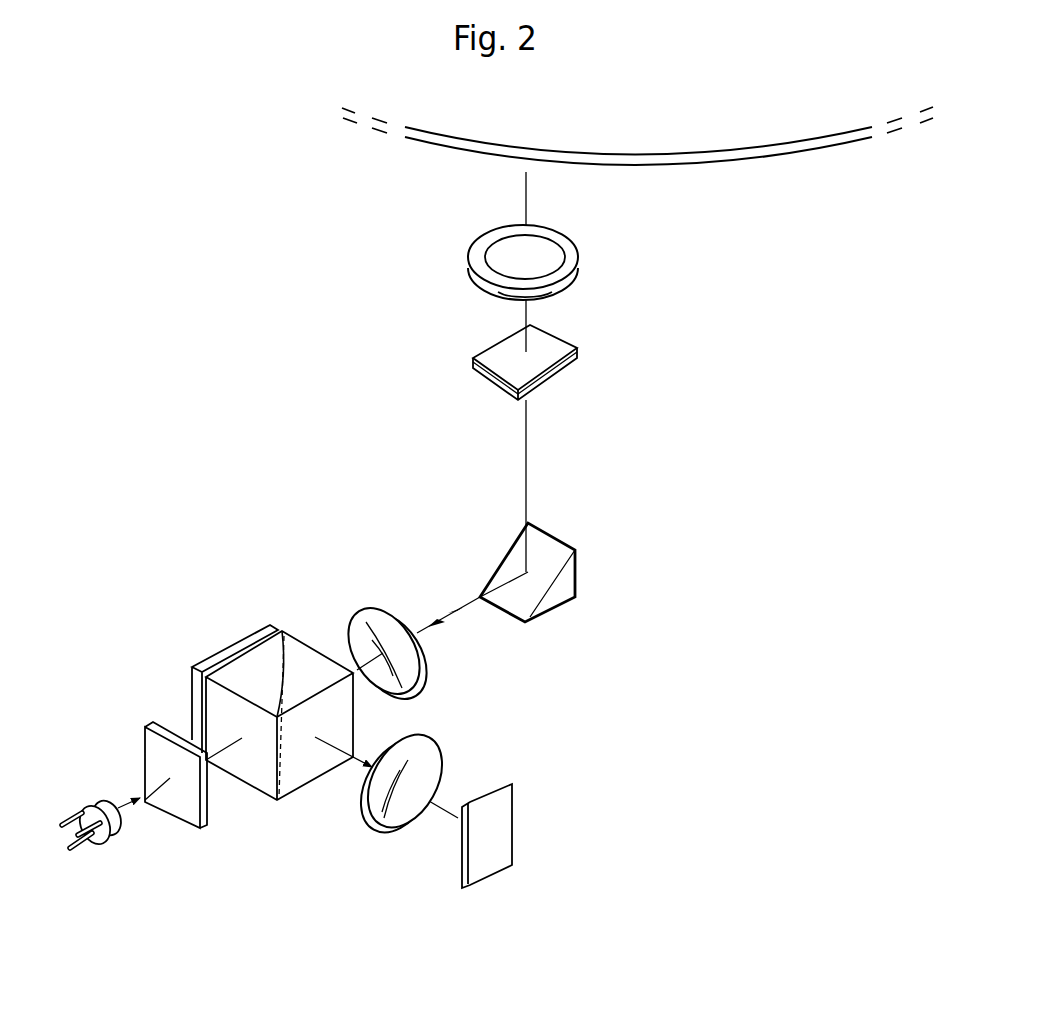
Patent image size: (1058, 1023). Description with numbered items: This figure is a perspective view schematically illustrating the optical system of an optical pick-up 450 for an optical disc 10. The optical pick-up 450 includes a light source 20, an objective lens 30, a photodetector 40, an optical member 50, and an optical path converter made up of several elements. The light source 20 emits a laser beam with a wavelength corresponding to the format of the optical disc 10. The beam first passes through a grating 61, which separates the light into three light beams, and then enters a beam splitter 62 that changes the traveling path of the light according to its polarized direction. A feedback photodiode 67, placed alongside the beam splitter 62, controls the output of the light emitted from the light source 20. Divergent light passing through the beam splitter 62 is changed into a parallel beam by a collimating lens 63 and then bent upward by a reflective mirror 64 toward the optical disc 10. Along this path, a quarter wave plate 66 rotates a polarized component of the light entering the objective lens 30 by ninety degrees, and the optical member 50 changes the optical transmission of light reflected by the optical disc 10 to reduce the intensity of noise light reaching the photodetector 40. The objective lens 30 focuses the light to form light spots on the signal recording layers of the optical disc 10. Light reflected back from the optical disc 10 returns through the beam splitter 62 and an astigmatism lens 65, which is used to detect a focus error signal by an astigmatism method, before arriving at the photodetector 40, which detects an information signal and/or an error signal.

The optical disc 10 is at (740, 142).
The light source 20 is at (90, 805).
The objective lens 30 is at (573, 257).
The photodetector 40 is at (505, 782).
The optical member 50 is at (556, 368).
The grating 61 is at (150, 723).
The beam splitter 62 is at (295, 645).
The collimating lens 63 is at (373, 610).
The reflective mirror 64 is at (505, 563).
The astigmatism lens 65 is at (428, 750).
The quarter wave plate 66 is at (572, 345).
The feedback photodiode 67 is at (220, 652).
The optical pick-up 450 is at (236, 349).